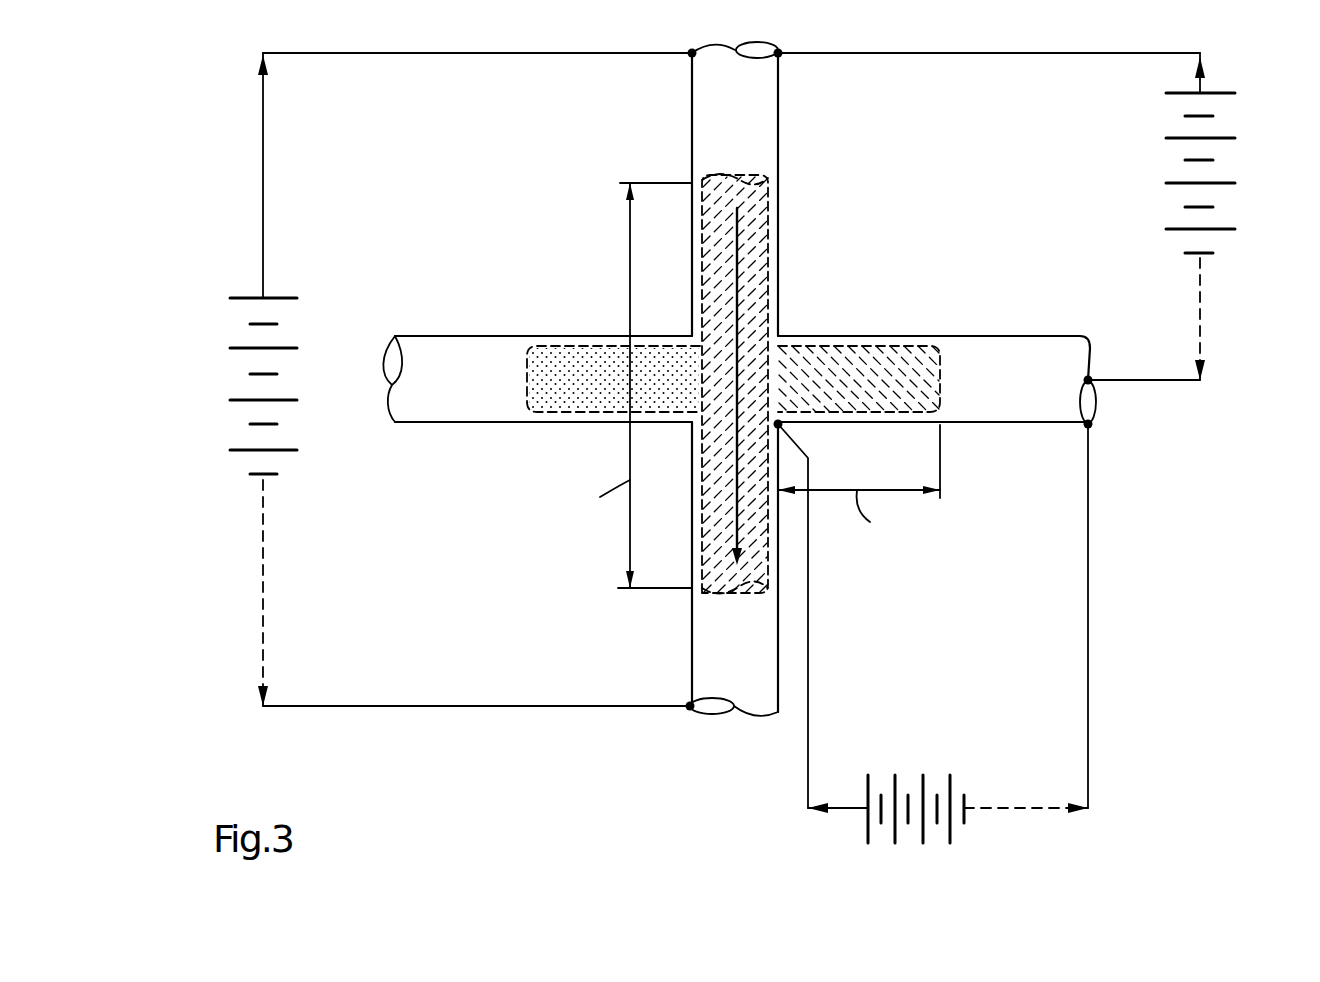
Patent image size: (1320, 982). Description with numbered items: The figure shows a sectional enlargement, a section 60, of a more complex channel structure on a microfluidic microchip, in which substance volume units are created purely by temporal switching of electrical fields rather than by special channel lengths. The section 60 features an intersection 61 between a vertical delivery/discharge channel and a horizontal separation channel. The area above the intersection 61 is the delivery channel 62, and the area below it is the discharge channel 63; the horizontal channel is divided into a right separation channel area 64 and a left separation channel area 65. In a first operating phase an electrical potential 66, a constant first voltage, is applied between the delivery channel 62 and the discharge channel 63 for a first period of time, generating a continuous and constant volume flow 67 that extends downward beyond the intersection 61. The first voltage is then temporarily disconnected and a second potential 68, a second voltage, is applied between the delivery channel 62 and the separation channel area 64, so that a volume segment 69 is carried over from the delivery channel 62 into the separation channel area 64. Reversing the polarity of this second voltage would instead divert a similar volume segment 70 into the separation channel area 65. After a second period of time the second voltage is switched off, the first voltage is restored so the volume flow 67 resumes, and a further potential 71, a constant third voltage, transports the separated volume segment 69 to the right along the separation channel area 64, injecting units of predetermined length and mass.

The section of channel structure 60 is at (930, 560).
The intersection 61 is at (684, 330).
The delivery channel 62 is at (757, 123).
The discharge channel 63 is at (750, 688).
The separation channel area 64 is at (1055, 352).
The separation channel area 65 is at (442, 405).
The electrical potential 66 is at (287, 297).
The volume flow 67 is at (737, 282).
The second potential 68 is at (1240, 297).
The volume segment 69 is at (915, 355).
The volume segment 70 is at (589, 402).
The potential 71 is at (982, 823).